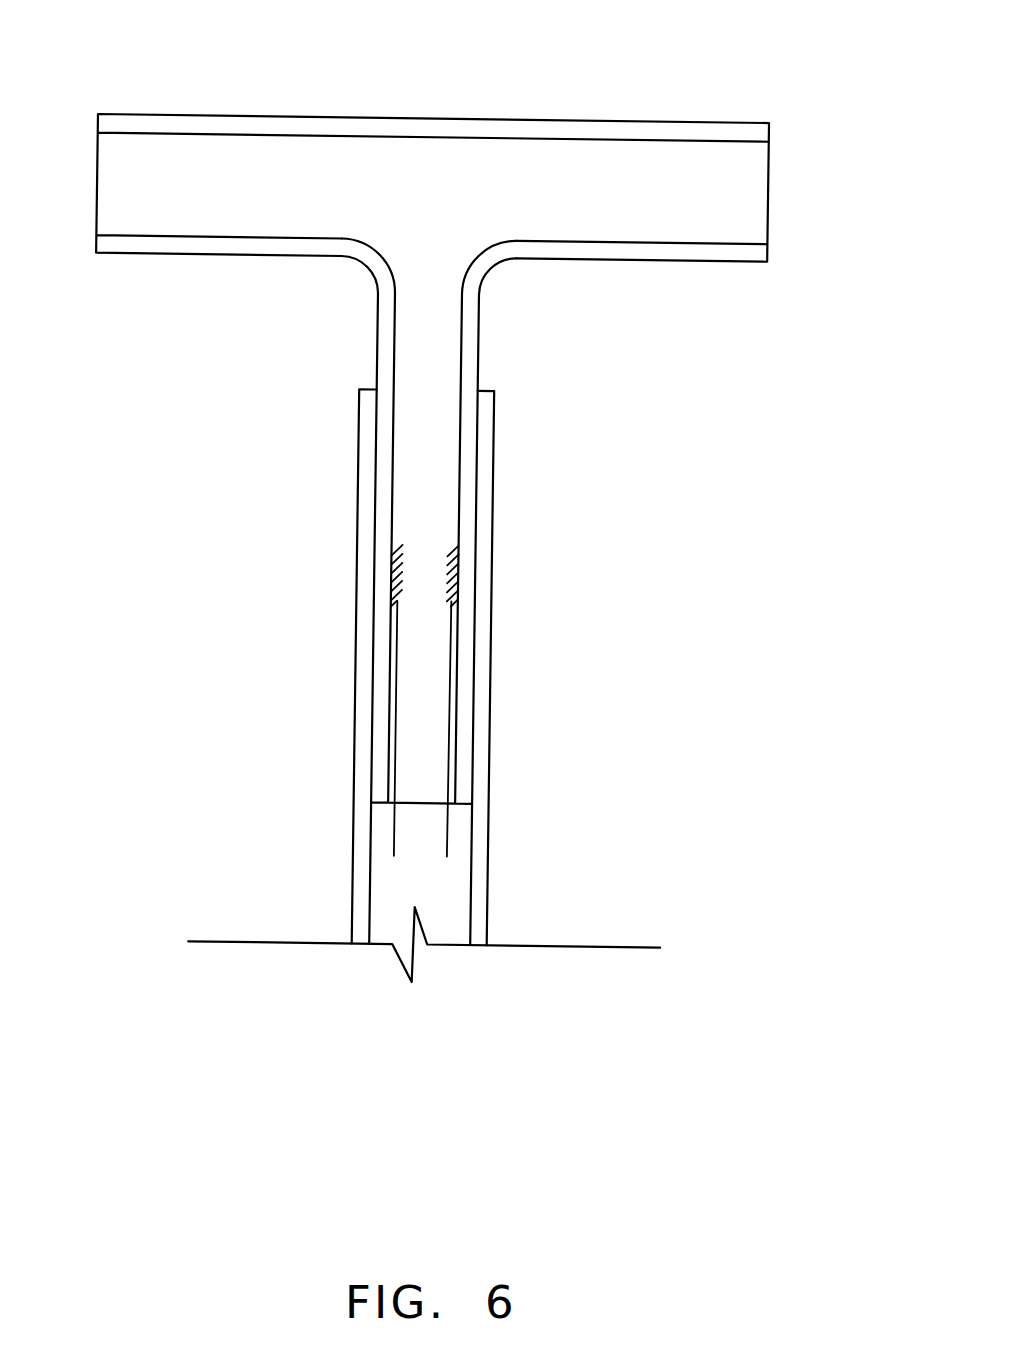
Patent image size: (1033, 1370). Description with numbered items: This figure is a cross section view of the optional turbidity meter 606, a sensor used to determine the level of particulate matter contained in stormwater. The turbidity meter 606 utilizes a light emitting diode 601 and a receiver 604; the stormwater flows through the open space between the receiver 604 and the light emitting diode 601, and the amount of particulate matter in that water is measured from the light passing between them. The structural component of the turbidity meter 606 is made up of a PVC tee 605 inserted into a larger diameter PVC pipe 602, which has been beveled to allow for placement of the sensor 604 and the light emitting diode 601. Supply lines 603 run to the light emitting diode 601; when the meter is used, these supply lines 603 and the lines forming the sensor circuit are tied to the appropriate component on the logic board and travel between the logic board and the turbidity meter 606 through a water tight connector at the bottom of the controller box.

The light emitting diode 601 is at (462, 570).
The larger diameter PVC pipe 602 is at (496, 481).
The supply lines 603 is at (455, 714).
The receiver 604 is at (395, 572).
The tube 605 is at (379, 336).
The turbidity meter 606 is at (491, 117).